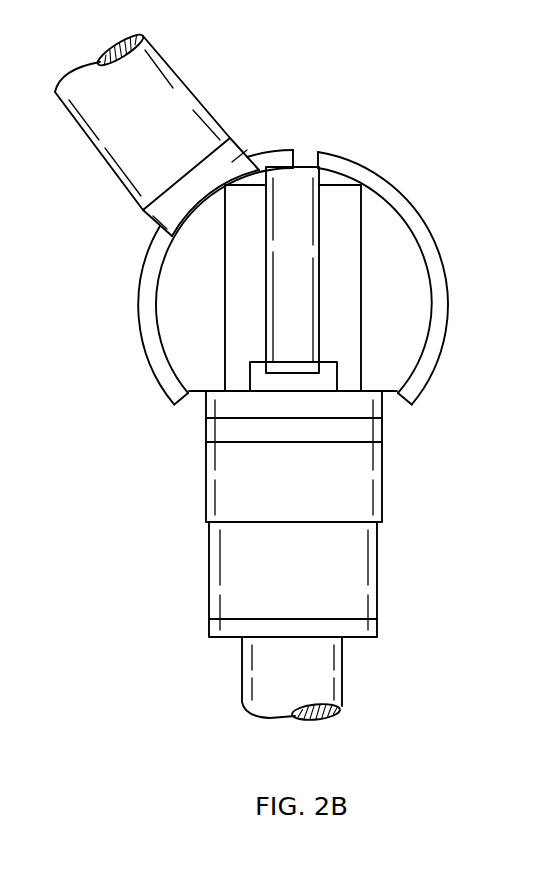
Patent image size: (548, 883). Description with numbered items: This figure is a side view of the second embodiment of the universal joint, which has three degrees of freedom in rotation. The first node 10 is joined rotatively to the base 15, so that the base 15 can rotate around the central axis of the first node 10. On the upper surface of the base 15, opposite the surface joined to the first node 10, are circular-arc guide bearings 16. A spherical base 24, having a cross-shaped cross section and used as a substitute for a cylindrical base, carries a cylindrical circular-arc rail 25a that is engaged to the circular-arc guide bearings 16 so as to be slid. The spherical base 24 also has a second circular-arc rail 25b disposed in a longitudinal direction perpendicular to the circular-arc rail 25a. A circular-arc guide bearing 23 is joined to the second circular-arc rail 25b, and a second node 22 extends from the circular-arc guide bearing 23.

The first node 10 is at (313, 662).
The base 15 is at (217, 468).
The circular-arc guide bearings 16 is at (320, 383).
The second node 22 is at (173, 90).
The circular-arc guide bearing 23 is at (235, 158).
The spherical base 24 is at (237, 277).
The circular-arc rail 25a is at (298, 207).
The second circular-arc rail 25b is at (198, 393).